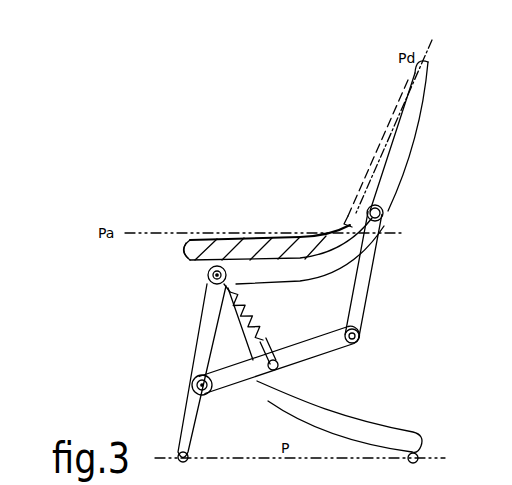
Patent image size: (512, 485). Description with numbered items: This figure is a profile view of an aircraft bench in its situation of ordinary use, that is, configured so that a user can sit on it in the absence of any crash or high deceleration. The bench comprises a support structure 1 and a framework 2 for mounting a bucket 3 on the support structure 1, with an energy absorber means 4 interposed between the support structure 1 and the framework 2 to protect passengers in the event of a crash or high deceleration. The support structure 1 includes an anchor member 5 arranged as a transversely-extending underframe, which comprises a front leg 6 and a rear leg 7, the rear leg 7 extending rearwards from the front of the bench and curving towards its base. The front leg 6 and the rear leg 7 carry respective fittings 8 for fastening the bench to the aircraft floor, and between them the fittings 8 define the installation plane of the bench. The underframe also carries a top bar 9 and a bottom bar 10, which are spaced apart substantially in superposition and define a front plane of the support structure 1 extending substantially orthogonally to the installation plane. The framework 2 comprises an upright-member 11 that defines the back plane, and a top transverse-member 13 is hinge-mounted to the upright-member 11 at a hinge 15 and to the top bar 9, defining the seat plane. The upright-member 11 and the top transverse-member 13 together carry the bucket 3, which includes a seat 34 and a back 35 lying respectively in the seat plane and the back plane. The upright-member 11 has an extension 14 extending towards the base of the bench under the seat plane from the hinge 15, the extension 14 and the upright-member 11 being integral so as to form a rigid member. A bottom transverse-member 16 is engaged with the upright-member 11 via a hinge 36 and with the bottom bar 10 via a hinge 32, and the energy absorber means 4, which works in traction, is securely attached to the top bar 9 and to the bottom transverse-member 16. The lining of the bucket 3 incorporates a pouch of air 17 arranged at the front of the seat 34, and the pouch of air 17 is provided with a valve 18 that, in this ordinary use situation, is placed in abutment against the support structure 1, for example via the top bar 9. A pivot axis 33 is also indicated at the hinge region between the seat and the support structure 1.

The support structure 1 is at (170, 351).
The framework 2 is at (427, 280).
The bucket 3 is at (350, 134).
The energy absorber means 4 is at (260, 322).
The anchor member 5 is at (378, 405).
The front leg 6 is at (199, 432).
The rear leg 7 is at (350, 417).
The fitting 8 is at (176, 455).
The top bar 9 is at (207, 278).
The bottom bar 10 is at (213, 391).
The upright-member 11 is at (416, 138).
The top transverse-member 13 is at (323, 279).
The extension 14 is at (367, 301).
The hinge 15 is at (384, 222).
The bottom transverse-member 16 is at (318, 357).
The pouch of air 17 is at (220, 238).
The valve 18 is at (182, 254).
The hinge 32 is at (193, 383).
The hinge axis 33 is at (212, 282).
The seat 34 is at (313, 232).
The back 35 is at (365, 176).
The hinge 36 is at (359, 338).